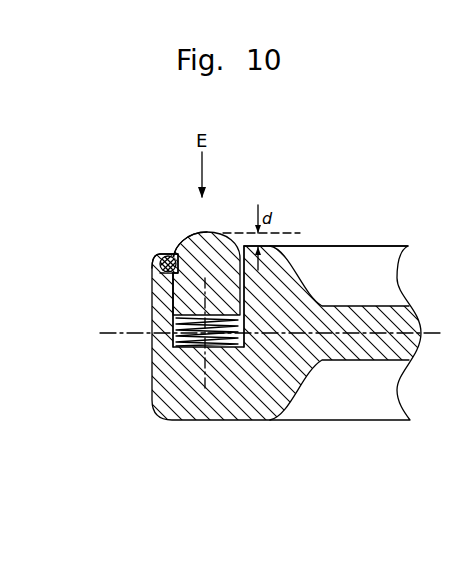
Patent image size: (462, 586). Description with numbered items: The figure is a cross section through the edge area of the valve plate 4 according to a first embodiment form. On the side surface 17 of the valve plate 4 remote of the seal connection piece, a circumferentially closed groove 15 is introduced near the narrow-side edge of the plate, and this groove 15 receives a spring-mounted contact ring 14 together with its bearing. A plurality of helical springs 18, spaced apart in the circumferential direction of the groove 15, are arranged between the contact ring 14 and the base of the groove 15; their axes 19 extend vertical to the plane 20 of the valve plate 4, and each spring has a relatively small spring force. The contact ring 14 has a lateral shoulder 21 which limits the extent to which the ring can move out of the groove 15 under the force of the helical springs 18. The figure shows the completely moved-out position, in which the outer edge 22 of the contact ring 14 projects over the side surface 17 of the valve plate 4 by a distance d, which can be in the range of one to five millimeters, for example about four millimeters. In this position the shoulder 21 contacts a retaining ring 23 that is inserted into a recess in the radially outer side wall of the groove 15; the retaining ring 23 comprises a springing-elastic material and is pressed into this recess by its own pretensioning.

The valve plate 4 is at (360, 353).
The contact ring 14 is at (188, 243).
The groove 15 is at (243, 333).
The side surface 17 is at (272, 247).
The helical springs 18 is at (175, 338).
The axes 19 is at (197, 369).
The plane 20 is at (343, 333).
The lateral shoulder 21 is at (165, 279).
The outer edge 22 is at (186, 243).
The retaining ring 23 is at (162, 258).